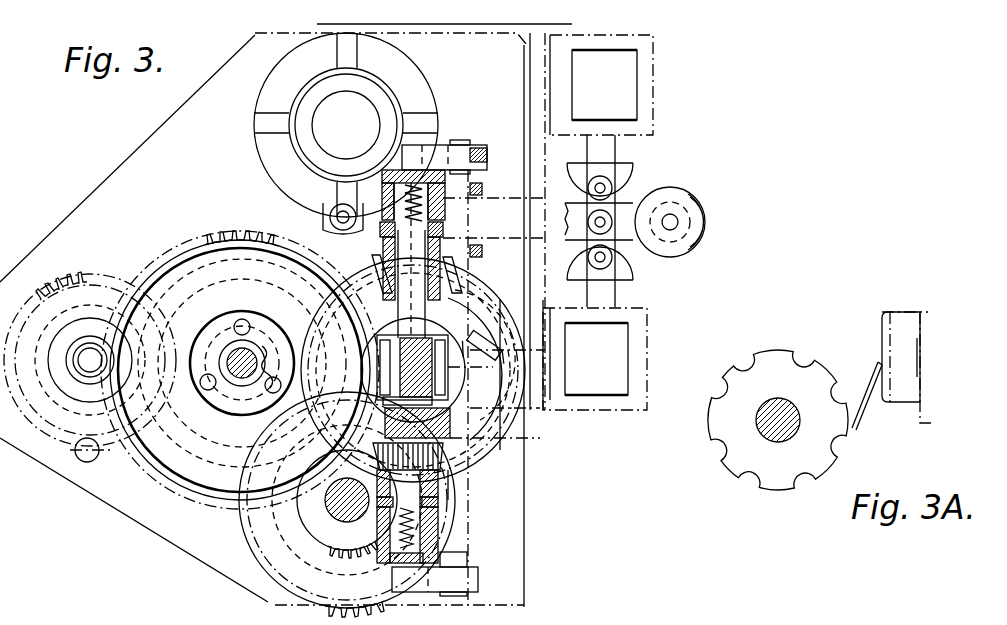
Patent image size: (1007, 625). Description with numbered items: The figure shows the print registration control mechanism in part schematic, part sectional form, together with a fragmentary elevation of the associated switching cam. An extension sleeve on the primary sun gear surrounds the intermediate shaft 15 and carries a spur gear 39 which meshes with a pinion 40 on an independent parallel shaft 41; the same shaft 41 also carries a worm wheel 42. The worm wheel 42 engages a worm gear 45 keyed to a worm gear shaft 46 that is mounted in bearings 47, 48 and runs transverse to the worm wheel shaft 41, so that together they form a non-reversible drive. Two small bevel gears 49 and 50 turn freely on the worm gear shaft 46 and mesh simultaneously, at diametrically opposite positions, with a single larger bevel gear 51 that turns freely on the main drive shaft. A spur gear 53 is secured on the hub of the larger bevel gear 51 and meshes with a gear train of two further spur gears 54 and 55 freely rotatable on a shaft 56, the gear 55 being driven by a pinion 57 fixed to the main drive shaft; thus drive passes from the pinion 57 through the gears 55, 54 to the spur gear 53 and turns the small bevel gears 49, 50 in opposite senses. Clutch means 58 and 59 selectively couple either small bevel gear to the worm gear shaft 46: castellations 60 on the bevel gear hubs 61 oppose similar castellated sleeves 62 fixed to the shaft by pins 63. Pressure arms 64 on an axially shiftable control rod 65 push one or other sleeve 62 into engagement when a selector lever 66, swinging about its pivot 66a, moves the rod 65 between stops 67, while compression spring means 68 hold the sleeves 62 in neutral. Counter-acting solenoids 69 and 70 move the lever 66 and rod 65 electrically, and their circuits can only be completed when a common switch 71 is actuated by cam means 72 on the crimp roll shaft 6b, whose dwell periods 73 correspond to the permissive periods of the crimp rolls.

In FIG. 3, the intermediate shaft 15 is at (97, 350).
In FIG. 3, the spur gear 39 is at (72, 274).
In FIG. 3, the pinion 40 is at (235, 330).
In FIG. 3, the worm wheel shaft 41 is at (238, 372).
In FIG. 3, the worm wheel 42 is at (222, 232).
In FIG. 3, the worm gear 45 is at (440, 350).
In FIG. 3, the worm gear shaft 46 is at (411, 260).
In FIG. 3, the bearing 47 is at (370, 302).
In FIG. 3, the bearing 48 is at (370, 433).
In FIG. 3, the small bevel gear 49 is at (455, 270).
In FIG. 3, the small bevel gear 50 is at (445, 455).
In FIG. 3, the larger bevel gear 51 is at (512, 330).
In FIG. 3, the spur gear 53 is at (500, 415).
In FIG. 3, the spur gear 54 is at (343, 540).
In FIG. 3, the spur gear 55 is at (250, 460).
In FIG. 3, the shaft 56 is at (340, 508).
In FIG. 3, the pinion 57 is at (350, 448).
In FIG. 3, the clutch means 58 is at (455, 214).
In FIG. 3, the clutch means 59 is at (458, 530).
In FIG. 3, the dog clutch castellations 60 is at (380, 240).
In FIG. 3, the bevel gear hub 61 is at (384, 262).
In FIG. 3, the clutch sleeve 62 is at (395, 173).
In FIG. 3, the pin 63 is at (385, 222).
In FIG. 3, the pressure arm 64 is at (440, 150).
In FIG. 3, the control rod 65 is at (465, 140).
In FIG. 3, the selector lever 66 is at (622, 210).
In FIG. 3, the pivot 66a is at (330, 213).
In FIG. 3, the stop 67 is at (483, 186).
In FIG. 3, the compression spring means 68 is at (387, 200).
In FIG. 3, the solenoid 69 is at (625, 97).
In FIG. 3, the solenoid 70 is at (625, 333).
In FIG. 3A, the crimp roll shaft 6b is at (770, 425).
In FIG. 3A, the common switch 71 is at (895, 320).
In FIG. 3A, the cam means 72 is at (813, 455).
In FIG. 3A, the dwell period 73 is at (822, 365).